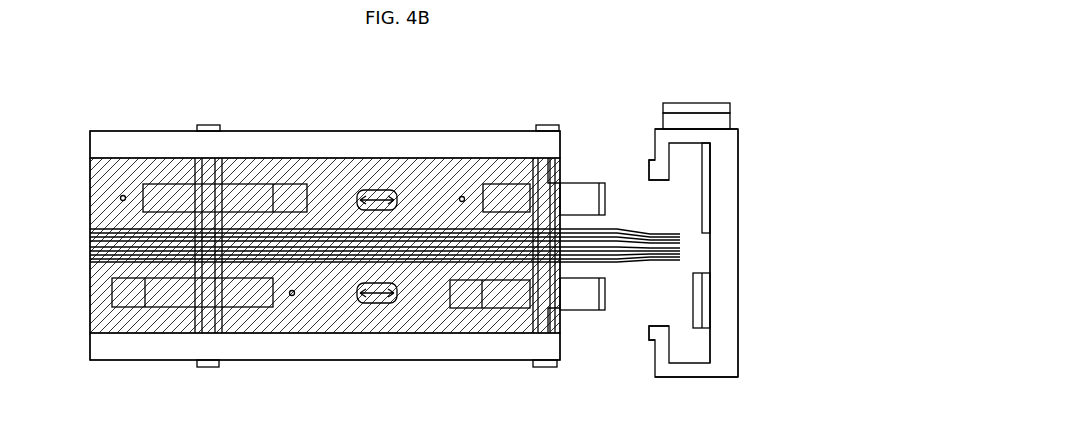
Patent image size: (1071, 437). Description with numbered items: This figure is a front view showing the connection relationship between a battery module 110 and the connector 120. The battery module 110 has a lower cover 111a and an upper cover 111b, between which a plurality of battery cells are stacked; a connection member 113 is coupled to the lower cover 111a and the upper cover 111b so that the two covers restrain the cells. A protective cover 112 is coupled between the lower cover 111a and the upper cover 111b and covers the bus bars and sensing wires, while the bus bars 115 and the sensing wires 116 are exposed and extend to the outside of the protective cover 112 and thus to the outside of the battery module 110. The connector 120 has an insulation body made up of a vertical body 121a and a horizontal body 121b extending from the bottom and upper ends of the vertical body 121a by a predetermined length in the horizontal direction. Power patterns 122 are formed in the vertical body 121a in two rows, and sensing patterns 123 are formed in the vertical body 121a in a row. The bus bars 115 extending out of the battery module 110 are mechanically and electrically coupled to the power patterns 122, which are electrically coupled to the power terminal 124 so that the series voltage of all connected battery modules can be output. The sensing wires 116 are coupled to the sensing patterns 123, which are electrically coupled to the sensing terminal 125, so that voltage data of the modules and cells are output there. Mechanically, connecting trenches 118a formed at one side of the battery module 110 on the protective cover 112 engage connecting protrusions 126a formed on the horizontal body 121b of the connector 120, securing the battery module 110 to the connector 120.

The battery module 110 is at (447, 95).
The lower cover 111a is at (114, 352).
The upper cover 111b is at (113, 137).
The protective cover 112 is at (90, 194).
The connection member 113 is at (211, 125).
The bus bars 115 is at (588, 191).
The sensing wires 116 is at (683, 236).
The connecting trenches 118a is at (558, 163).
The connector 120 is at (745, 152).
The vertical body 121a is at (725, 243).
The horizontal body 121b is at (678, 135).
The power patterns 122 is at (707, 212).
The sensing patterns 123 is at (697, 307).
The power terminal 124 is at (705, 112).
The sensing terminal 125 is at (722, 112).
The connecting protrusions 126a is at (648, 172).